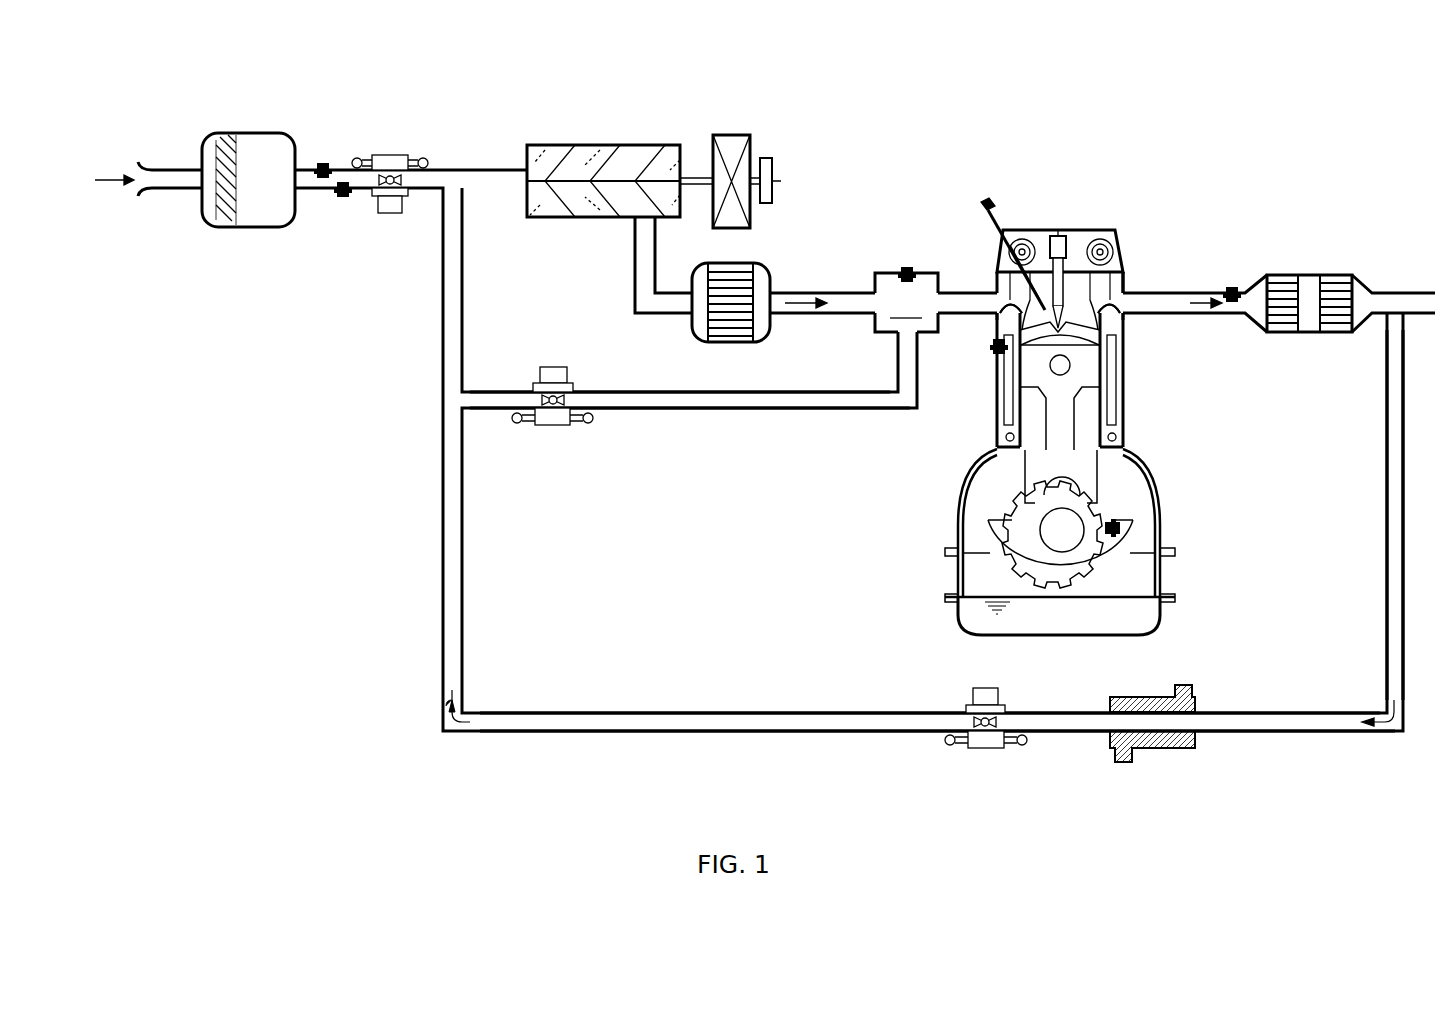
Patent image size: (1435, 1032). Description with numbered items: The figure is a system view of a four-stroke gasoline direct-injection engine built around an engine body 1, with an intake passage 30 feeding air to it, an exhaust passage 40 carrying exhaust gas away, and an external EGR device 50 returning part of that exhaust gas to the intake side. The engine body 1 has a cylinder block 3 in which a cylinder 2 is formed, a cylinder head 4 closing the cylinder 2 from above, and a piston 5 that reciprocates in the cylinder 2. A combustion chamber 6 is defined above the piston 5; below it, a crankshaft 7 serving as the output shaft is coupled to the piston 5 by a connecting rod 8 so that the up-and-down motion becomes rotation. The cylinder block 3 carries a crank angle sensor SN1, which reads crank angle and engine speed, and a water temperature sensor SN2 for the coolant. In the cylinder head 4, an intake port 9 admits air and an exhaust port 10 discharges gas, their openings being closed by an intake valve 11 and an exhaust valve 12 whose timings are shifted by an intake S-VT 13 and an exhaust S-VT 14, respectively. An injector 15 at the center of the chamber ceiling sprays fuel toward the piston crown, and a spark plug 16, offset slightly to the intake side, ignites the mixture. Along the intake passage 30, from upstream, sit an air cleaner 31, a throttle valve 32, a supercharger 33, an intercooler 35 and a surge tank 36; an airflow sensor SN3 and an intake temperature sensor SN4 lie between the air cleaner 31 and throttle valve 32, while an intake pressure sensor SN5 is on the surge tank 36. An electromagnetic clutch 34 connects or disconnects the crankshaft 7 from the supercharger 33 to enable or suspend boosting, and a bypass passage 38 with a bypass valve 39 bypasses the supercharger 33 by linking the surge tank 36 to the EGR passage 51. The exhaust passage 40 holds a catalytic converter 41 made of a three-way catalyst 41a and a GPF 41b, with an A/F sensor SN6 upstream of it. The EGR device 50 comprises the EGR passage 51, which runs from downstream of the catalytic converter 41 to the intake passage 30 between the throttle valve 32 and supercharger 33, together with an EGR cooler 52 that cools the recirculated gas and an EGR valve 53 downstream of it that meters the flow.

The engine body 1 is at (1097, 180).
The cylinder 2 is at (997, 437).
The cylinder block 3 is at (1125, 432).
The cylinder head 4 is at (1125, 330).
The piston 5 is at (1018, 392).
The combustion chamber 6 is at (1120, 355).
The crankshaft 7 is at (1070, 540).
The connecting rod 8 is at (1030, 464).
The intake port 9 is at (997, 320).
The exhaust port 10 is at (1118, 318).
The intake valve 11 is at (1018, 342).
The exhaust valve 12 is at (1123, 276).
The intake S-VT 13 is at (1015, 243).
The exhaust S-VT 14 is at (1105, 240).
The injector 15 is at (1058, 228).
The spark plug 16 is at (1000, 200).
The intake passage 30 is at (503, 193).
The air cleaner 31 is at (256, 230).
The throttle valve 32 is at (392, 215).
The supercharger 33 is at (598, 145).
The electromagnetic clutch 34 is at (737, 135).
The intercooler 35 is at (770, 272).
The surge tank 36 is at (906, 302).
The bypass passage 38 is at (697, 410).
The bypass valve 39 is at (552, 427).
The exhaust passage 40 is at (1200, 290).
The catalytic converter 41 is at (1312, 313).
The three-way catalyst 41a is at (1287, 335).
The GPF 41b is at (1335, 335).
The external EGR device 50 is at (913, 688).
The EGR passage 51 is at (1307, 712).
The EGR cooler 52 is at (1130, 698).
The EGR valve 53 is at (990, 688).
The crank angle sensor SN1 is at (1120, 528).
The water temperature sensor SN2 is at (992, 347).
The airflow sensor SN3 is at (323, 163).
The intake temperature sensor SN4 is at (343, 196).
The intake pressure sensor SN5 is at (907, 268).
The A/F sensor SN6 is at (1234, 288).